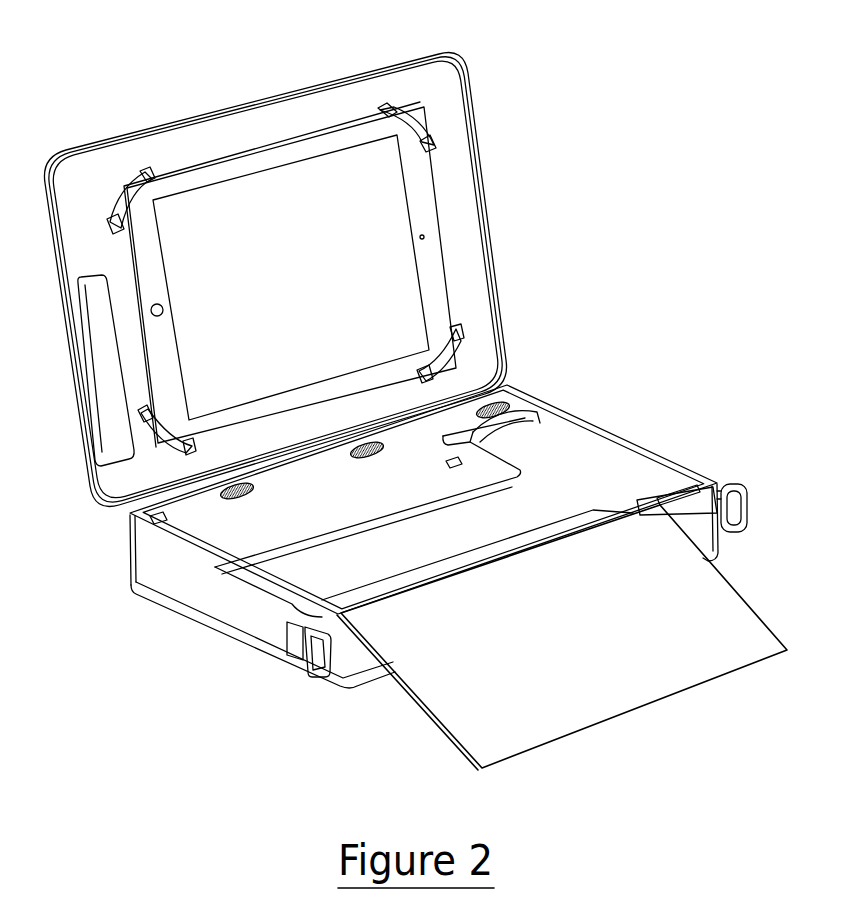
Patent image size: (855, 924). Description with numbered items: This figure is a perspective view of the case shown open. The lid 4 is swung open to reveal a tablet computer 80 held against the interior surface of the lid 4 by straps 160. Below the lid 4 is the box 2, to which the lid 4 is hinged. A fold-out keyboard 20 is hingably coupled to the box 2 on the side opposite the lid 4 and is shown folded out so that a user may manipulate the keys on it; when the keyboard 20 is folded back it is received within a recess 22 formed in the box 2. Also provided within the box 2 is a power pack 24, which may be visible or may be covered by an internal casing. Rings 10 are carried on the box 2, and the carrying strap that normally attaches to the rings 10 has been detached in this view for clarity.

The box 2 is at (227, 597).
The lid 4 is at (447, 88).
The rings 10 is at (308, 677).
The fold-out keyboard 20 is at (573, 657).
The recess 22 is at (563, 483).
The power pack 24 is at (200, 535).
The tablet computer 80 is at (280, 220).
The straps 160 is at (140, 170).